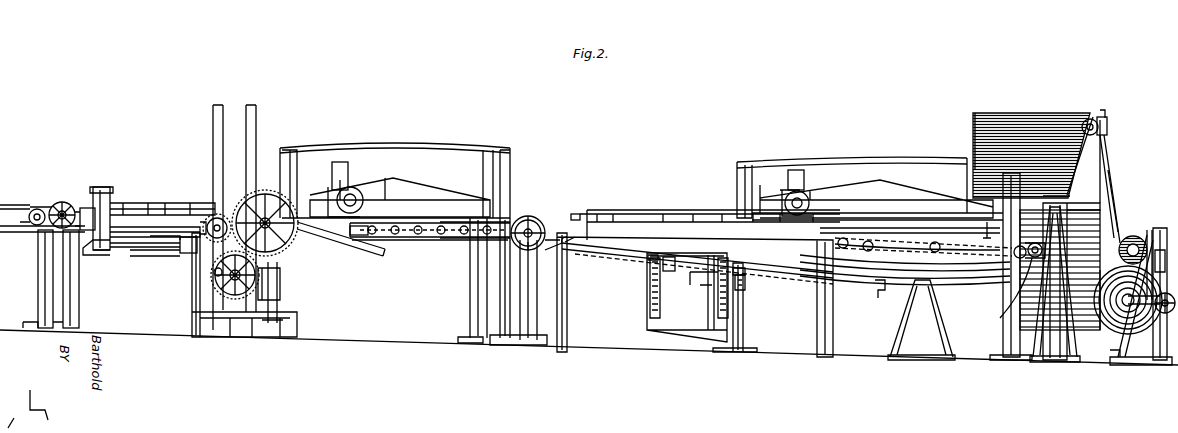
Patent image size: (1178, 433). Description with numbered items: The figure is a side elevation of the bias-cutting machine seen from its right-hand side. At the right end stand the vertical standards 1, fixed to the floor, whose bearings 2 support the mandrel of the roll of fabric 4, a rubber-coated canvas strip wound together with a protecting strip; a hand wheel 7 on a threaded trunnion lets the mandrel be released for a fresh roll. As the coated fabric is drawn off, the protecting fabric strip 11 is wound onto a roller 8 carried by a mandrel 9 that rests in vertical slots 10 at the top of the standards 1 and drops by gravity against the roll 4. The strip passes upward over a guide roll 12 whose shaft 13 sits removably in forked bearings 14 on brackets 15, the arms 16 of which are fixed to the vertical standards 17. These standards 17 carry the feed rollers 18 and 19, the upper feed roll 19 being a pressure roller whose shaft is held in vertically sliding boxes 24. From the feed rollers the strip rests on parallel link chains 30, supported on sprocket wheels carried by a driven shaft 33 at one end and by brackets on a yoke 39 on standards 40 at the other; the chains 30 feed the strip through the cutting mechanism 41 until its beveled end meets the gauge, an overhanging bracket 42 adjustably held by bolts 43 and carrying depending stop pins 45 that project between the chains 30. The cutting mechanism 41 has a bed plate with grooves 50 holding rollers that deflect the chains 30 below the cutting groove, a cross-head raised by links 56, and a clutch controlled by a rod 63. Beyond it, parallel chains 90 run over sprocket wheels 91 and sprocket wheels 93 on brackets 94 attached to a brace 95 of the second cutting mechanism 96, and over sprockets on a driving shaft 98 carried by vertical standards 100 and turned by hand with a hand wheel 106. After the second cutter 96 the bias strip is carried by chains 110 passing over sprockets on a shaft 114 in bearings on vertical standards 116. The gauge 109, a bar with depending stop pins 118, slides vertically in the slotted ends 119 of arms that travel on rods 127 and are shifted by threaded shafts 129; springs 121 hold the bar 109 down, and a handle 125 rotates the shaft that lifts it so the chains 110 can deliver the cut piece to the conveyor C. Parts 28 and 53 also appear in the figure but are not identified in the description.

The vertical standards 1 is at (1140, 360).
The bearings 2 is at (1135, 296).
The roll of fabric 4 is at (1036, 221).
The hand wheel 7 is at (1163, 313).
The roller 8 is at (1133, 236).
The mandrel 9 is at (1149, 230).
The vertical slots 10 is at (1160, 228).
The protecting fabric strip 11 is at (1124, 235).
The guide roll 12 is at (1090, 118).
The shaft 13 is at (1108, 125).
The forked bearings 14 is at (1107, 113).
The brackets 15 is at (1110, 162).
The arms 16 is at (1095, 210).
The vertical standards 17 is at (945, 335).
The feed roll 18 is at (1006, 294).
The upper feed roll 19 is at (1012, 252).
The boxes 24 is at (1075, 212).
The arm 28 is at (878, 299).
The link chains 30 is at (860, 283).
The driven shaft 33 is at (1045, 250).
The yoke 39 is at (605, 247).
The standards 40 is at (565, 332).
The cutting mechanism 41 is at (821, 156).
The overhanging bracket 42 is at (612, 203).
The bolts 43 is at (576, 212).
The stop pins 45 is at (668, 213).
The grooves 50 is at (848, 247).
The guide 53 is at (965, 278).
The links 56 is at (980, 232).
The rod 63 is at (668, 272).
The chains 90 is at (470, 240).
The sprocket wheels 91 is at (555, 250).
The sprocket wheels 93 is at (385, 240).
The brackets 94 is at (358, 237).
The brace 95 is at (415, 238).
The second cutting mechanism 96 is at (443, 280).
The driving shaft 98 is at (524, 255).
The vertical standards 100 is at (522, 345).
The hand wheel 106 is at (530, 218).
The gauge 109 is at (165, 205).
The chains 110 is at (168, 246).
The shaft 114 is at (58, 203).
The vertical standards 116 is at (60, 298).
The stop pins 118 is at (128, 202).
The slotted ends 119 is at (92, 205).
The springs 121 is at (108, 185).
The handle 125 is at (97, 238).
The rods 127 is at (150, 256).
The threaded shafts 129 is at (188, 253).
The conveyor C is at (42, 209).